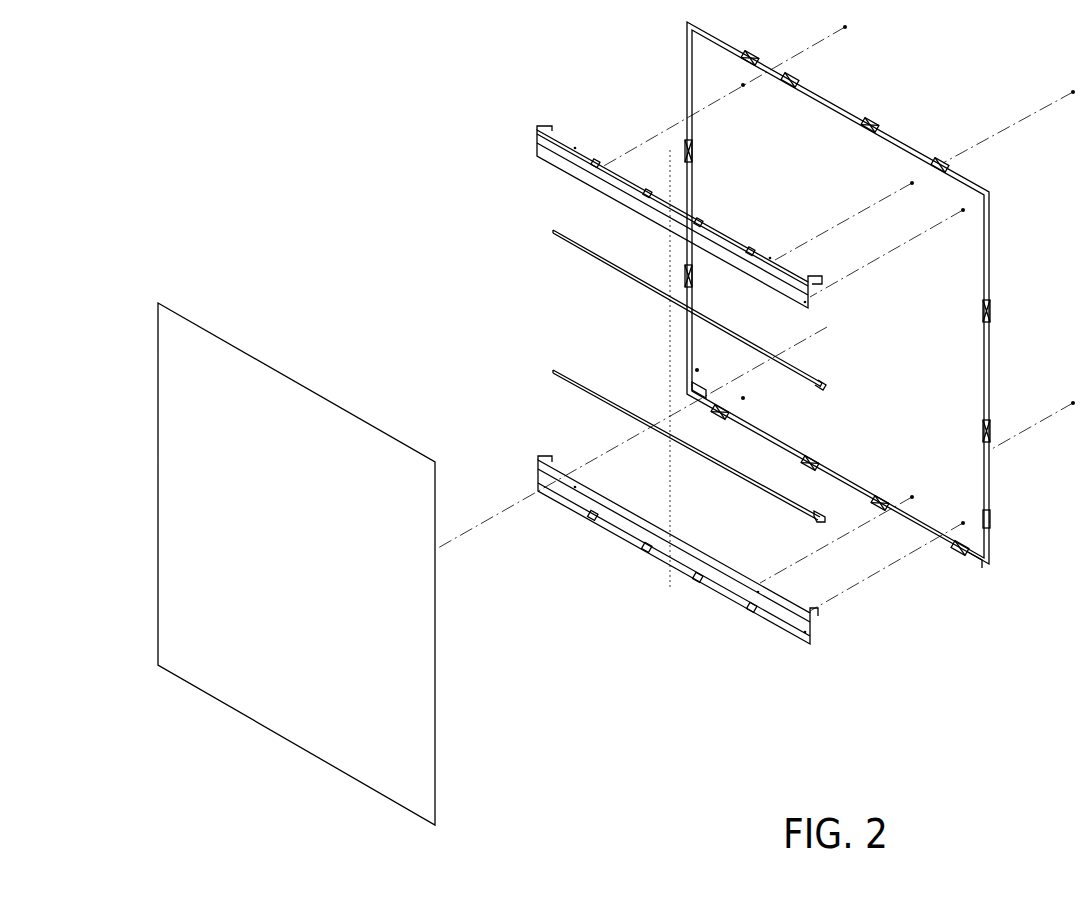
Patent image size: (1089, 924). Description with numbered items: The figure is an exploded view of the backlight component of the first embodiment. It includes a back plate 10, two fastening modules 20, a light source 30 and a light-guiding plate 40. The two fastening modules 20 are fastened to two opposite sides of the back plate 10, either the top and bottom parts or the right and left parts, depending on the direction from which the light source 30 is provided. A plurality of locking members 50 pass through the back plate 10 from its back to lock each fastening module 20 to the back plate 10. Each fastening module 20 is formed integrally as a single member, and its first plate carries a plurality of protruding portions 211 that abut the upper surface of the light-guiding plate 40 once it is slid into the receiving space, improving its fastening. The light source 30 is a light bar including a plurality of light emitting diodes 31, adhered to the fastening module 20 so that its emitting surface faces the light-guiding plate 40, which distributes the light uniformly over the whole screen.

The back plate 10 is at (993, 228).
The fastening module 20 is at (582, 142).
The protruding portion 211 is at (595, 162).
The light source 30 is at (717, 383).
The light emitting diode 31 is at (686, 453).
The light-guiding plate 40 is at (352, 432).
The locking member 50 is at (845, 28).